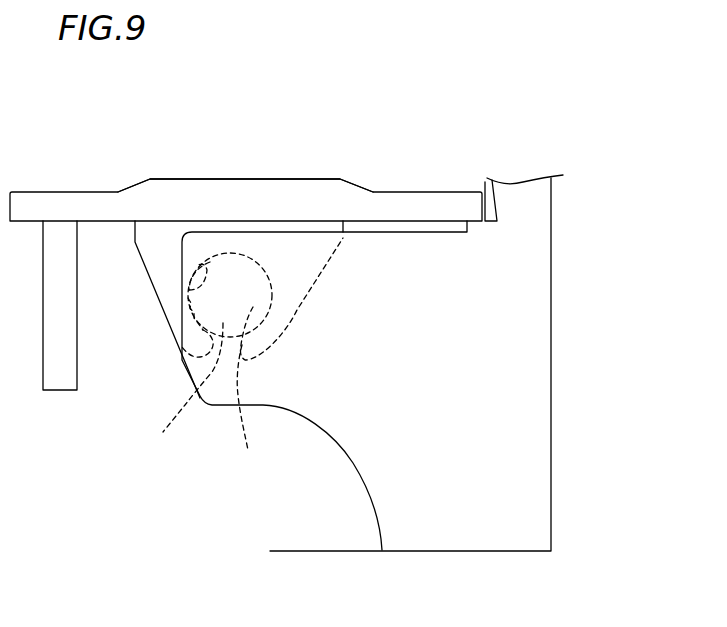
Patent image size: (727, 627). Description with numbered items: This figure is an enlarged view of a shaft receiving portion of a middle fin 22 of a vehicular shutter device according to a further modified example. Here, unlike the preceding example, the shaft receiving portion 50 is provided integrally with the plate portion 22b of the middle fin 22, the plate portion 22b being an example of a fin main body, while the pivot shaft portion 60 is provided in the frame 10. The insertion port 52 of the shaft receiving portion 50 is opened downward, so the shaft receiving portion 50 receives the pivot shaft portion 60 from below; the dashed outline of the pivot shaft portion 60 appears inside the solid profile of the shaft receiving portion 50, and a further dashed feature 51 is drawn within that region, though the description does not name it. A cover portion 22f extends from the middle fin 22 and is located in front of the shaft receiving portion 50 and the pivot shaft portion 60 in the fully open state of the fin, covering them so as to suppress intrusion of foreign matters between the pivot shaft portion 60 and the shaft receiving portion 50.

The frame 10 is at (556, 256).
The middle fin 22 is at (250, 161).
The plate portion 22b is at (170, 190).
The cover portion 22f is at (60, 387).
The shaft receiving portion 50 is at (157, 303).
The engaging portion 51 is at (193, 287).
The insertion port 52 is at (290, 359).
The pivot shaft portion 60 is at (212, 357).